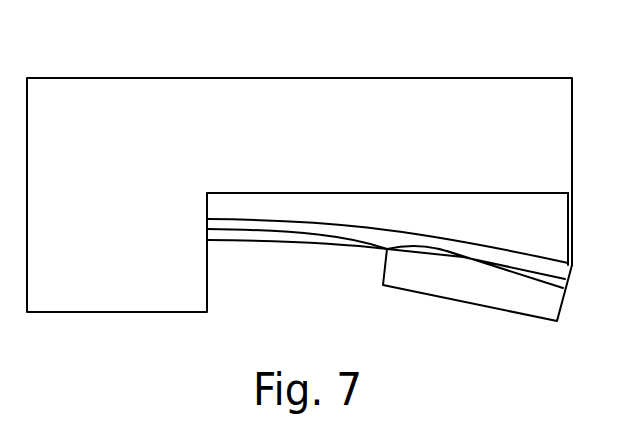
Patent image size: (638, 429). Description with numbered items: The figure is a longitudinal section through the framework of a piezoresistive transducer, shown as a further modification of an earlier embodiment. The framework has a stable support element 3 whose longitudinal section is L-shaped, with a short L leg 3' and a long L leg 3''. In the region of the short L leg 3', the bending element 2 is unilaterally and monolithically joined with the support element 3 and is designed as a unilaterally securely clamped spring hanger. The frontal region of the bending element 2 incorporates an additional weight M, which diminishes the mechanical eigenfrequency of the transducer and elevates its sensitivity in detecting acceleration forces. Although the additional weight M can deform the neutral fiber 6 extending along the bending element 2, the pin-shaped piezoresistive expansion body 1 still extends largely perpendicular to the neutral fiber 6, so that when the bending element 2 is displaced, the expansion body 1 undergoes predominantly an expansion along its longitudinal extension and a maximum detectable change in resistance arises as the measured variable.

The support element 3 is at (299, 195).
The long L leg 3'' is at (295, 50).
The short L leg 3' is at (120, 358).
The expansion body 1 is at (573, 223).
The bending element 2 is at (278, 238).
The neutral fiber 6 is at (463, 258).
The additional weight M is at (477, 292).